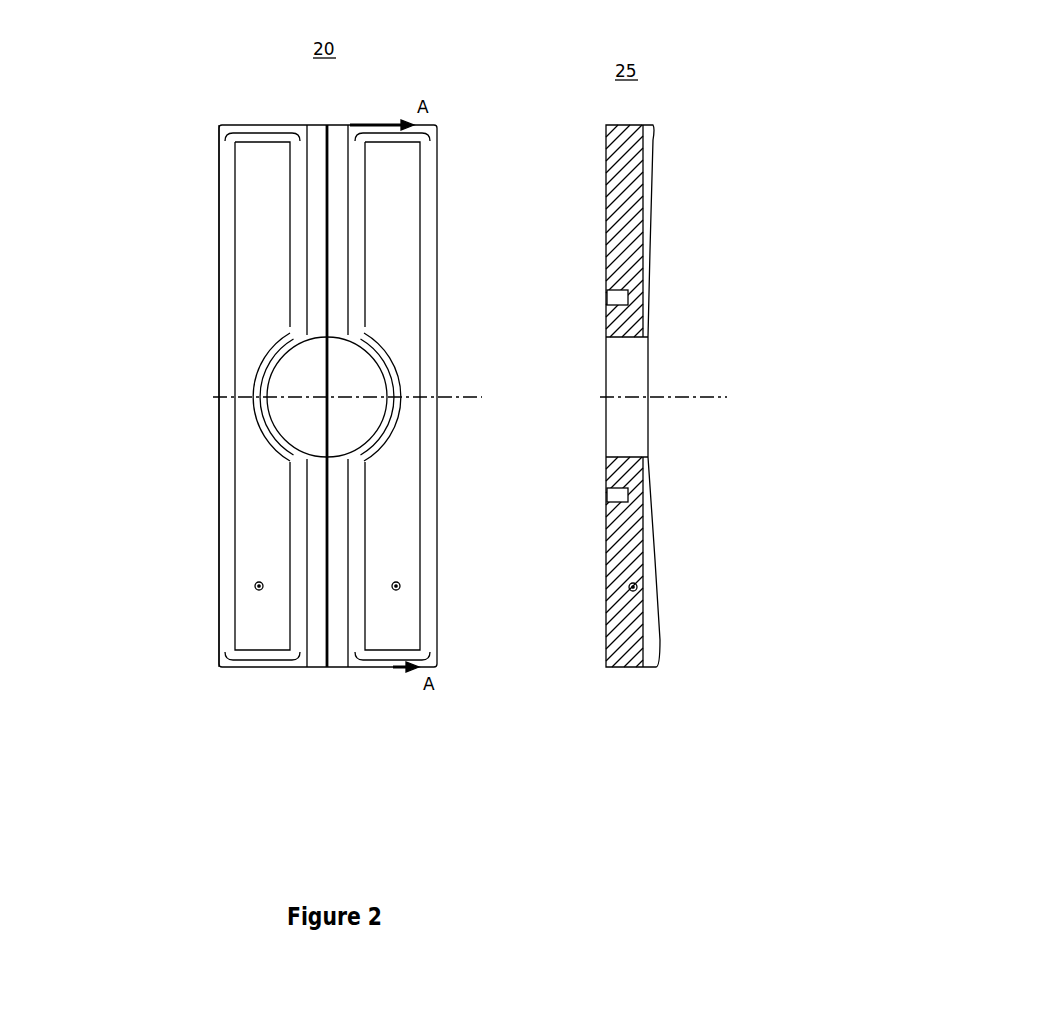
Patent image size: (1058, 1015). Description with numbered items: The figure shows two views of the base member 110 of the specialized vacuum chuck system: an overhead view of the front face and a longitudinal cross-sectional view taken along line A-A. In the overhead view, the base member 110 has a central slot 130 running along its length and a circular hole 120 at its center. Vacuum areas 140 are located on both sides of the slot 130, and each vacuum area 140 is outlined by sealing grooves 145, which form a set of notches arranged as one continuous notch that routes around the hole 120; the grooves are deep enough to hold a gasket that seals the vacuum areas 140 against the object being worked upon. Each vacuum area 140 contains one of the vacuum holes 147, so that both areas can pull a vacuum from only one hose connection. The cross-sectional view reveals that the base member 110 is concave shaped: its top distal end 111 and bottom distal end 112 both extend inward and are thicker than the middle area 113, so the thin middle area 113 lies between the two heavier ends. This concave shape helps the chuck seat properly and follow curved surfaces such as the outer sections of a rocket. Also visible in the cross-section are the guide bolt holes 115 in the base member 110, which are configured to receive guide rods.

The base member 110 is at (205, 124).
The top distal end 111 is at (454, 157).
The bottom distal end 112 is at (452, 644).
The middle area 113 is at (445, 404).
The guide bolt holes 115 is at (607, 478).
The hole 120 is at (282, 373).
The slot 130 is at (317, 655).
The vacuum areas 140 is at (372, 211).
The sealing grooves 145 is at (219, 520).
The vacuum holes 147 is at (367, 591).